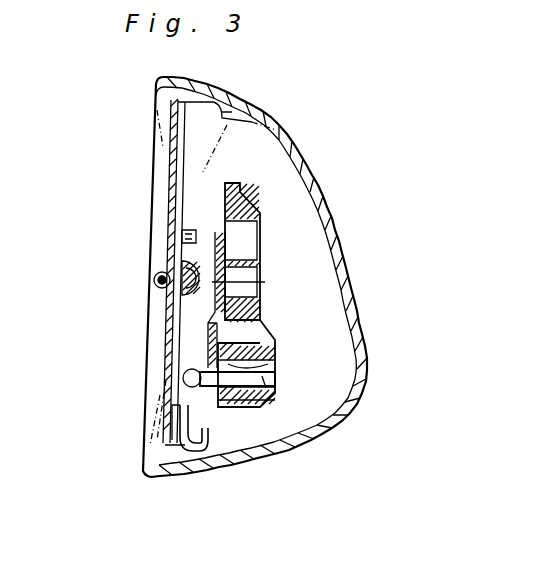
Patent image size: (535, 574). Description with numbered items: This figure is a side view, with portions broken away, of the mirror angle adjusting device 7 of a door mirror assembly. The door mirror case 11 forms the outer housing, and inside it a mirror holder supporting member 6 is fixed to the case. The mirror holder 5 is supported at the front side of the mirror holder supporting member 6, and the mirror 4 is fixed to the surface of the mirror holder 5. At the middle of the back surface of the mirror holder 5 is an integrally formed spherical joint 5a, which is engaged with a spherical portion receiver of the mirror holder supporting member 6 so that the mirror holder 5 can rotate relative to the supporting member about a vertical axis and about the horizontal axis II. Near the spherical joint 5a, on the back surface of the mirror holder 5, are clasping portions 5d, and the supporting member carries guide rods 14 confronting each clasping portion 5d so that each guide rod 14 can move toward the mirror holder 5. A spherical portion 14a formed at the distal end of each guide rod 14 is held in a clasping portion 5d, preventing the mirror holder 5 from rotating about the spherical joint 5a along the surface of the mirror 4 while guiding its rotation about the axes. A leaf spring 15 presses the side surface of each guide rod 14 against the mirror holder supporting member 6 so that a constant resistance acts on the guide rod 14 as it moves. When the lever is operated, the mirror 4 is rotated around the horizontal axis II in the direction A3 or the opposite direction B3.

The mirror assembly 7 is at (312, 98).
The door mirror case 11 is at (305, 160).
The mirror 4 is at (171, 186).
The mirror holder 5 is at (183, 160).
The spherical joint 5a is at (265, 282).
The mirror holder supporting member 6 is at (262, 220).
The leaf spring 15 is at (270, 343).
The guide rod 14 is at (262, 396).
The spherical portion 14a is at (183, 376).
The clasping portion 5d is at (198, 392).
The horizontal axis II is at (160, 279).
The direction B3 is at (158, 273).
The direction A3 is at (158, 284).